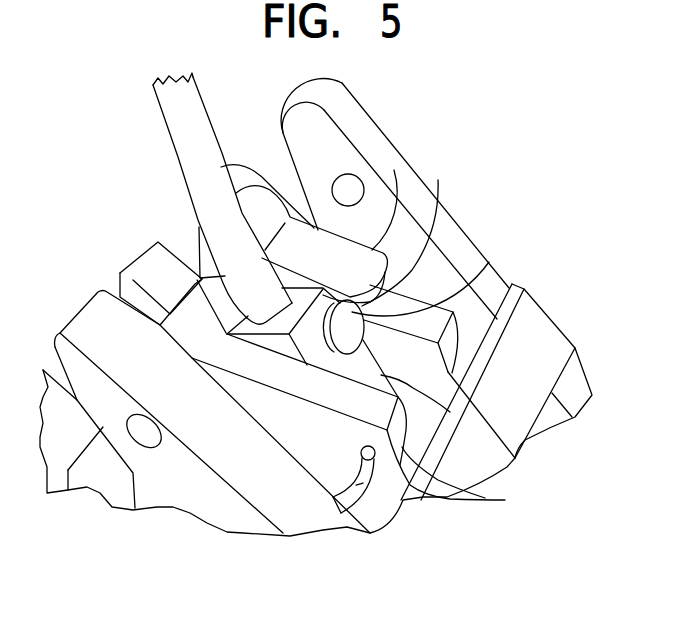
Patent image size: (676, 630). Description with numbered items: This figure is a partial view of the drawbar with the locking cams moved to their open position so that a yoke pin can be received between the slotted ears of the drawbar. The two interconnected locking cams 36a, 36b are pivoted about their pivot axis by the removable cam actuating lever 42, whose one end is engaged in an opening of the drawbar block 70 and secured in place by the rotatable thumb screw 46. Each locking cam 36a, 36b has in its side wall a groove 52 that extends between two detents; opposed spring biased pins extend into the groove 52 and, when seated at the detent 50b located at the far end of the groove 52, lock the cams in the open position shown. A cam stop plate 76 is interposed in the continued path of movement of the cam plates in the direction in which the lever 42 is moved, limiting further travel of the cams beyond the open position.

The cam actuating lever 42 is at (173, 123).
The thumb screw 46 is at (438, 195).
The cam stop plate 76 is at (396, 150).
The locking cam 36a is at (489, 262).
The locking cam 36b is at (317, 450).
The drawbar block 70 is at (517, 458).
The detent 50b is at (485, 498).
The groove 52 is at (400, 465).